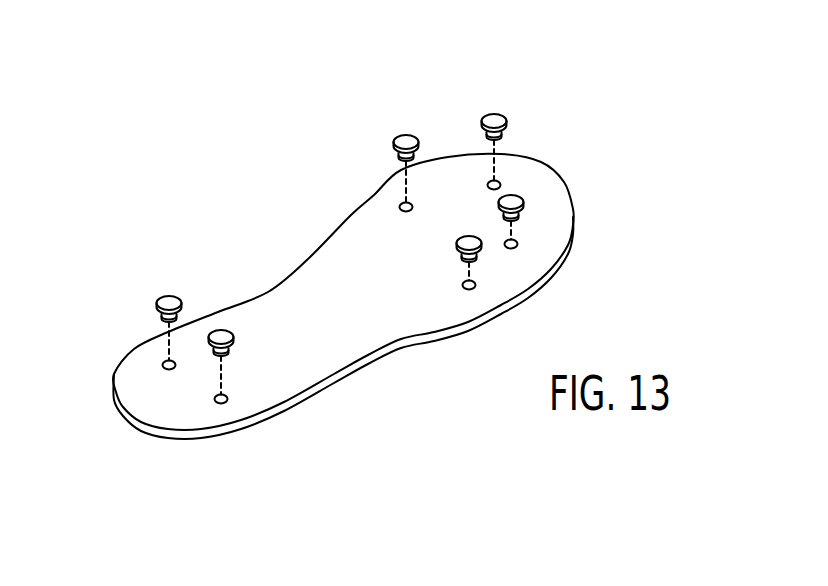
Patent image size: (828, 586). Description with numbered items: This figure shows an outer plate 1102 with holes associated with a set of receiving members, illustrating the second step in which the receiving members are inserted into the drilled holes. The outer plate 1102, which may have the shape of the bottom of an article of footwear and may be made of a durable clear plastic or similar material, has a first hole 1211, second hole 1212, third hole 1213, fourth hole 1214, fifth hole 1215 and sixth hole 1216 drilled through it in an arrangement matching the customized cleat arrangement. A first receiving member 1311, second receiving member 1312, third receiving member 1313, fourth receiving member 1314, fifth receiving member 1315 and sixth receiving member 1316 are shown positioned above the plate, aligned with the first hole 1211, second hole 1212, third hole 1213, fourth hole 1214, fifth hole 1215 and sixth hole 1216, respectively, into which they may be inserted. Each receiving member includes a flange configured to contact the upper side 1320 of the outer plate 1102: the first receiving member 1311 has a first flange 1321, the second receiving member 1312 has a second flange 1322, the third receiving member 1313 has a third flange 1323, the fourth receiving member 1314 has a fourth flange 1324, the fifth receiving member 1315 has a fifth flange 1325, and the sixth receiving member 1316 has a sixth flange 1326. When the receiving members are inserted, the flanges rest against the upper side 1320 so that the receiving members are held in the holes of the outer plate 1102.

The outer plate 1102 is at (343, 296).
The upper side 1320 is at (325, 285).
The first flange 1321 is at (464, 239).
The second flange 1322 is at (516, 197).
The third flange 1323 is at (493, 116).
The fourth flange 1324 is at (405, 135).
The fifth flange 1325 is at (168, 298).
The sixth flange 1326 is at (222, 331).
The first receiving member 1311 is at (481, 243).
The second receiving member 1312 is at (523, 201).
The third receiving member 1313 is at (503, 119).
The fourth receiving member 1314 is at (395, 142).
The fifth receiving member 1315 is at (158, 300).
The sixth receiving member 1316 is at (231, 337).
The first hole 1211 is at (468, 289).
The second hole 1212 is at (517, 241).
The third hole 1213 is at (499, 183).
The fourth hole 1214 is at (399, 206).
The fifth hole 1215 is at (162, 363).
The sixth hole 1216 is at (218, 403).